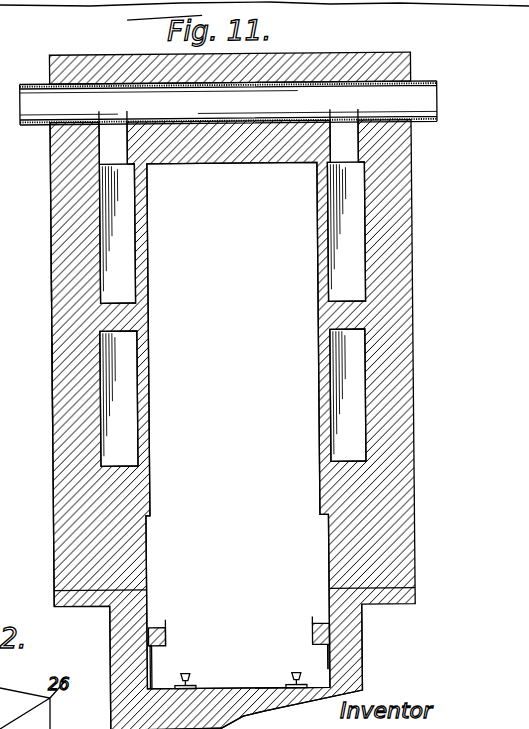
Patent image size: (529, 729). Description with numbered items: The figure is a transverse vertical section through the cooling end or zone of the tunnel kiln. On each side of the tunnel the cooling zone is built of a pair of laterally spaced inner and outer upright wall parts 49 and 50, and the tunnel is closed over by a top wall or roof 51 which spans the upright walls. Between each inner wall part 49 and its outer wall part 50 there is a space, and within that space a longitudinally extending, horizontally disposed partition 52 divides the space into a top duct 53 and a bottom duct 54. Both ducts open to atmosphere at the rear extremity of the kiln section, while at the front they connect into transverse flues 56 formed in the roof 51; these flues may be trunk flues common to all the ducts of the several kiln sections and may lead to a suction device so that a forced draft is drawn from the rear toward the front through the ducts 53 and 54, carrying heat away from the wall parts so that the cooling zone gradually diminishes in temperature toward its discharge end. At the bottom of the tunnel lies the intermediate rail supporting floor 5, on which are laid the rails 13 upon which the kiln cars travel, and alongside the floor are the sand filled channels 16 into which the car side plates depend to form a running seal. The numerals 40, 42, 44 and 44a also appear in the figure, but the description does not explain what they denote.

The base plate 5 is at (244, 688).
The bolt 13 is at (193, 667).
The packing 16 is at (158, 645).
The mold body 40 is at (0, 252).
The side wall 42 is at (0, 371).
The side member 44 is at (0, 414).
The side member portion 44a is at (26, 277).
The block 49 is at (62, 290).
The cavity 50 is at (150, 292).
The top plate 51 is at (322, 63).
The partition 52 is at (110, 313).
The heating slot 53 is at (110, 202).
The lower slot 54 is at (106, 435).
The pipe 56 is at (66, 96).